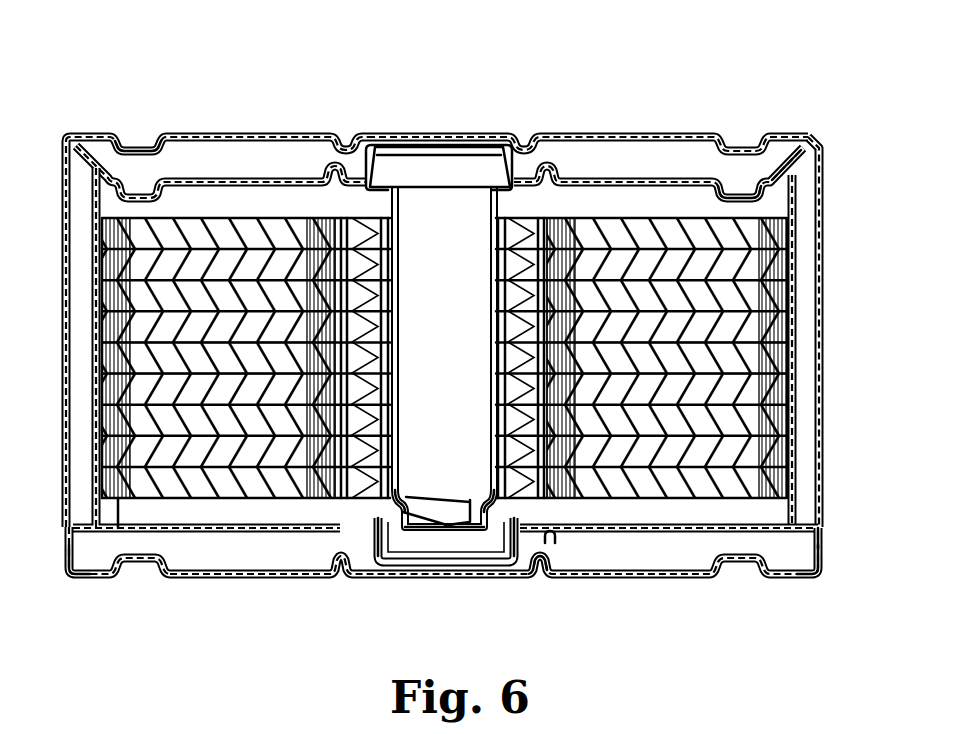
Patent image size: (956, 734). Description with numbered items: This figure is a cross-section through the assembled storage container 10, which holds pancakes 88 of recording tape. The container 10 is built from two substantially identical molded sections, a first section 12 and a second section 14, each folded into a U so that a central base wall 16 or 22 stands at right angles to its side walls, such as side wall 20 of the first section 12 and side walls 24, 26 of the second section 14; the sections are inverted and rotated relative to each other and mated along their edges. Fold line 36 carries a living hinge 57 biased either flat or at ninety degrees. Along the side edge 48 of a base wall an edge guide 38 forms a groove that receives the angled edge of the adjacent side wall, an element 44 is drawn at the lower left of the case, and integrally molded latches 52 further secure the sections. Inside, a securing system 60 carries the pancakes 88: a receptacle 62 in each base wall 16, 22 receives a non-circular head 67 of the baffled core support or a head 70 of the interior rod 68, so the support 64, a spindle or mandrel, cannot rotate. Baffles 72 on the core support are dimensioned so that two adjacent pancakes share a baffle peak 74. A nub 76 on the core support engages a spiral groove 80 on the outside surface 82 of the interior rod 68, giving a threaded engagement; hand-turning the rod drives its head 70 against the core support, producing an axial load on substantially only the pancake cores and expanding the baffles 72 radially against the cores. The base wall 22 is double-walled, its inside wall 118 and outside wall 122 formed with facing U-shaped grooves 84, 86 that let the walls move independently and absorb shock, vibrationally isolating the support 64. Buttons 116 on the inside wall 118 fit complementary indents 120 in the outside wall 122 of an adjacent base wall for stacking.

The container 10 is at (556, 92).
The first section 12 is at (298, 581).
The second section 14 is at (826, 147).
The central base wall 16 is at (685, 578).
The side wall 20 is at (650, 194).
The central base wall 22 is at (228, 135).
The side wall 24 is at (62, 402).
The side wall 26 is at (824, 248).
The fold line 36 is at (70, 137).
The edge guide 38 is at (828, 531).
The inner container wall 44 is at (66, 512).
The side edge 48 is at (118, 513).
The latch 52 is at (67, 549).
The living hinge 57 is at (803, 131).
The system for securing disk-shaped articles 60 is at (250, 511).
The receptacle 62 is at (503, 573).
The support 64 is at (533, 519).
The head 67 is at (445, 546).
The interior rod 68 is at (404, 208).
The head 70 is at (518, 136).
The baffle 72 is at (498, 433).
The baffle peak 74 is at (398, 402).
The nub 76 is at (392, 504).
The spiral groove 80 is at (430, 508).
The outside surface 82 is at (392, 548).
The U-shaped groove 84 is at (557, 539).
The U-shaped groove 86 is at (575, 578).
The pancake 88 is at (722, 450).
The button 116 is at (746, 186).
The inside wall 118 is at (668, 524).
The indent 120 is at (140, 135).
The outside wall 122 is at (628, 579).